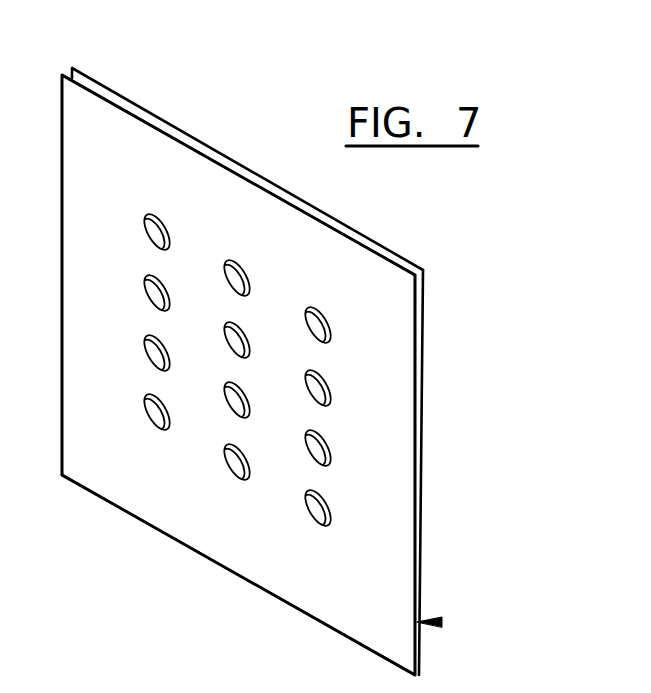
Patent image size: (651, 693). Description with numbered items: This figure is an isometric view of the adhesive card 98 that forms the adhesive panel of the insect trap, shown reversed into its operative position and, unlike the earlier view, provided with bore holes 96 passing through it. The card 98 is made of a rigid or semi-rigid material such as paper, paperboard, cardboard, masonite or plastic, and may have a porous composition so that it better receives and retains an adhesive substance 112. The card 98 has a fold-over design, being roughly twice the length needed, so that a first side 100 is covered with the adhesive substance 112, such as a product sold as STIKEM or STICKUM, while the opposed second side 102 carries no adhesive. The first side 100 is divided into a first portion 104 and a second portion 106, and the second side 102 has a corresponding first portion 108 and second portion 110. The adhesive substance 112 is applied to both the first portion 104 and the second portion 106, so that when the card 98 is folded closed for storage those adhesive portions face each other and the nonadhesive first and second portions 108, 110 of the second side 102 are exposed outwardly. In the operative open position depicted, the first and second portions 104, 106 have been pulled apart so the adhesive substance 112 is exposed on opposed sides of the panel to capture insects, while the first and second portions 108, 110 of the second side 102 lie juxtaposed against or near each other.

The bore holes 96 is at (162, 290).
The card 98 is at (440, 622).
The first side 100 is at (424, 310).
The second side 102 is at (163, 130).
The first portion 104 is at (423, 388).
The second portion 106 is at (132, 490).
The first portion 108 is at (97, 82).
The second portion 110 is at (62, 75).
The adhesive substance 112 is at (423, 353).